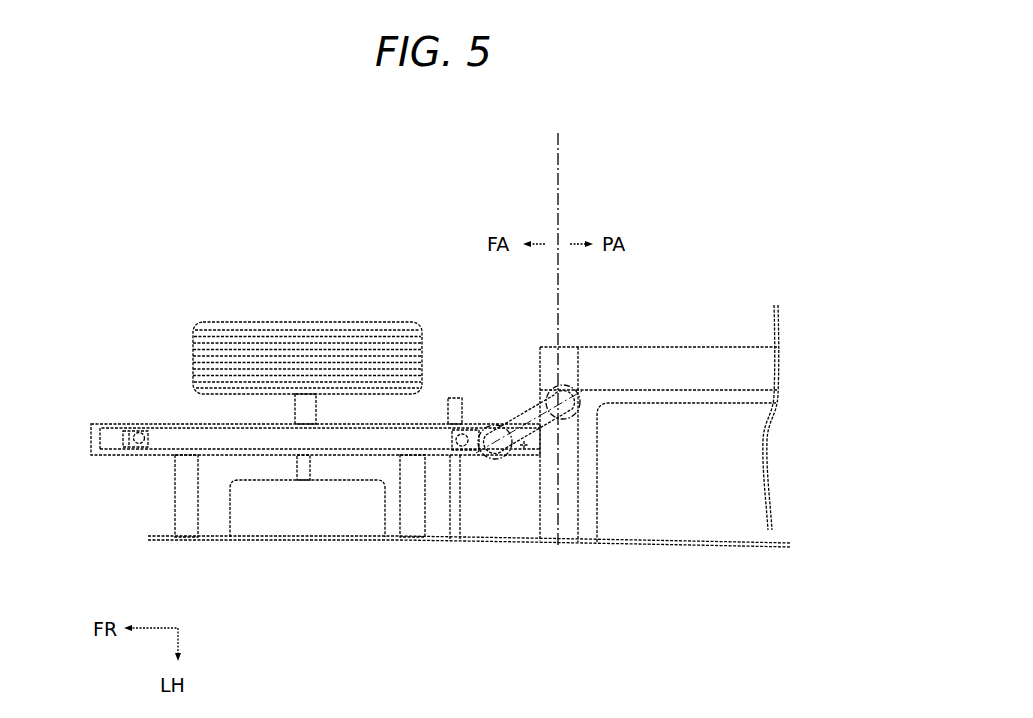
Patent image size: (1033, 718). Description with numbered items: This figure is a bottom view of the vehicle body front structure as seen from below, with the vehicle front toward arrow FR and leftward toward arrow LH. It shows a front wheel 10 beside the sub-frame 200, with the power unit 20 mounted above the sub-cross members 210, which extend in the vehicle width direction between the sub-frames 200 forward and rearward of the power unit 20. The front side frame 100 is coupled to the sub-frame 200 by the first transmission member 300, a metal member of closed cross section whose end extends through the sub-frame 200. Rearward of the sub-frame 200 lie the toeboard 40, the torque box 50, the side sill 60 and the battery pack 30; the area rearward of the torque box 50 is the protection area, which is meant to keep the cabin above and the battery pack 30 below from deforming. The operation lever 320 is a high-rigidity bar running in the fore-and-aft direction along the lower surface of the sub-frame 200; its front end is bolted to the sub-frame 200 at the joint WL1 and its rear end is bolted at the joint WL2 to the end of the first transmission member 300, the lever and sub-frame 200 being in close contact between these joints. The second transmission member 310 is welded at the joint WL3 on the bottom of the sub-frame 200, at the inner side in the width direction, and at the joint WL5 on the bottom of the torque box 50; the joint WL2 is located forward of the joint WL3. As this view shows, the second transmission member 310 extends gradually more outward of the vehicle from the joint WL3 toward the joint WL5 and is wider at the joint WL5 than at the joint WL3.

The front wheel 10 is at (295, 340).
The power unit 20 is at (307, 512).
The battery pack 30 is at (685, 525).
The toeboard 40 is at (457, 525).
The torque box 50 is at (558, 525).
The side sill 60 is at (655, 362).
The front side frame 100 is at (258, 424).
The sub-frame 200 is at (118, 432).
The sub-cross member 210 is at (188, 513).
The first transmission member 300 is at (524, 447).
The second transmission member 310 is at (524, 418).
The operation lever 320 is at (185, 438).
The joint WL1 is at (131, 462).
The joint WL2 is at (470, 458).
The joint WL3 is at (492, 418).
The joint WL5 is at (570, 387).